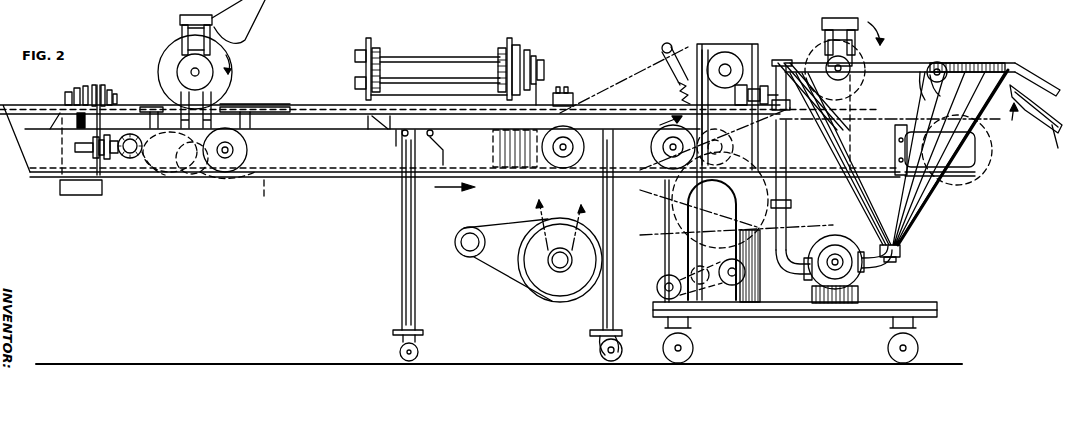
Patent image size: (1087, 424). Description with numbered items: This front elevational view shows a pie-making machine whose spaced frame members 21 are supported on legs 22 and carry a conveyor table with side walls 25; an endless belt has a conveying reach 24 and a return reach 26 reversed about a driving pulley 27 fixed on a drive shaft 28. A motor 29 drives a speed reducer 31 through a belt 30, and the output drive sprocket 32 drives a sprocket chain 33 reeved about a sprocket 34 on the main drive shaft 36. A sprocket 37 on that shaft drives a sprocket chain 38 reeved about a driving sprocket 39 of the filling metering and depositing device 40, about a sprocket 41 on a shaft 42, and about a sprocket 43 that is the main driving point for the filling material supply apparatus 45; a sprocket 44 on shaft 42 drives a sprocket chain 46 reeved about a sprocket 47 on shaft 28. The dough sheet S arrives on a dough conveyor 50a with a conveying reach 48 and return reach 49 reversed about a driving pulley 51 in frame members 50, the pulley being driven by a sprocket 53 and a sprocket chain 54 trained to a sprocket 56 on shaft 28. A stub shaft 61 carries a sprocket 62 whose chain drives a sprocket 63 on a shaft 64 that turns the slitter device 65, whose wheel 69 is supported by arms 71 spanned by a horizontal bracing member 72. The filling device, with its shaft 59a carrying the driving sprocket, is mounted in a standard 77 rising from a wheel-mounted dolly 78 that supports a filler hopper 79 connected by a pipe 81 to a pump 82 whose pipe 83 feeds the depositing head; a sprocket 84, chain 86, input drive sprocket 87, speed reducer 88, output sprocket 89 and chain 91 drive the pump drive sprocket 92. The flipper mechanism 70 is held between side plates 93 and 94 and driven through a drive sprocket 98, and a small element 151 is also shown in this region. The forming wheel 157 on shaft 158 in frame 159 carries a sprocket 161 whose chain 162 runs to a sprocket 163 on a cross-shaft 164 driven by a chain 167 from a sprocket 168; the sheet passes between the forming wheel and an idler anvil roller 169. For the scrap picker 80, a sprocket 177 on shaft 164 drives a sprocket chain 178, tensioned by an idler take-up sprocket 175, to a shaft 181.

The frame members 21 is at (300, 179).
The legs 22 is at (418, 292).
The conveying reach 24 is at (865, 112).
The side walls 25 is at (306, 104).
The return reach 26 is at (365, 179).
The driving pulley 27 is at (975, 175).
The drive shaft 28 is at (985, 147).
The motor 29 is at (468, 250).
The belt 30 is at (487, 270).
The speed reducer 31 is at (600, 260).
The output drive sprocket 32 is at (574, 256).
The sprocket chain 33 is at (540, 206).
The sprocket 34 is at (573, 118).
The main drive shaft 36 is at (563, 160).
The sprocket 37 is at (583, 130).
The sprocket chain 38 is at (652, 84).
The driving sprocket 39 is at (727, 64).
The filling metering and depositing device 40 is at (756, 40).
The sprocket 41 is at (670, 172).
The shaft 42 is at (668, 160).
The sprocket 43 is at (786, 205).
The sprocket 44 is at (662, 118).
The filling material supply apparatus 45 is at (915, 232).
The sprocket chain 46 is at (790, 124).
The sprocket 47 is at (950, 180).
The conveying reach 48 is at (1053, 90).
The return reach 49 is at (1061, 144).
The frame members 50 is at (1036, 114).
The dough conveyor 50a is at (1015, 119).
The driving pulley 51 is at (946, 66).
The sprocket 53 is at (935, 60).
The sprocket chain 54 is at (988, 62).
The sprocket 56 is at (985, 160).
The coupling 59a is at (722, 62).
The stub shaft 61 is at (727, 150).
The sprocket 62 is at (782, 70).
The sprocket 63 is at (845, 36).
The shaft 64 is at (855, 78).
The slitter device 65 is at (880, 31).
The wheel 69 is at (822, 60).
The flipper mechanism 70 is at (446, 42).
The arms 71 is at (815, 57).
The horizontal bracing member 72 is at (838, 20).
The standard 77 is at (708, 50).
The dolly 78 is at (783, 312).
The filler hopper 79 is at (920, 205).
The scrap picker 80 is at (101, 83).
The pipe 81 is at (872, 274).
The pump 82 is at (846, 312).
The pipe 83 is at (787, 225).
The sprocket 84 is at (780, 192).
The chain 86 is at (662, 268).
The input drive sprocket 87 is at (657, 290).
The speed reducer 88 is at (715, 300).
The output sprocket 89 is at (700, 266).
The chain 91 is at (830, 236).
The drive sprocket 92 is at (845, 247).
The side plate 93 is at (508, 45).
The side plate 94 is at (368, 46).
The drive sprocket 98 is at (539, 62).
The switch 151 is at (563, 86).
The forming wheel 157 is at (232, 88).
The shaft 158 is at (186, 78).
The frame 159 is at (181, 28).
The sprocket 161 is at (184, 70).
The chain 162 is at (262, 94).
The sprocket 163 is at (226, 172).
The cross-shaft 164 is at (210, 175).
The chain 167 is at (278, 202).
The sprocket 168 is at (530, 184).
The idler anvil roller 169 is at (166, 186).
The idler take-up sprocket 175 is at (129, 160).
The sprocket 177 is at (231, 205).
The sprocket chain 178 is at (182, 176).
The shaft 181 is at (124, 160).
The dough sheet S is at (222, 107).